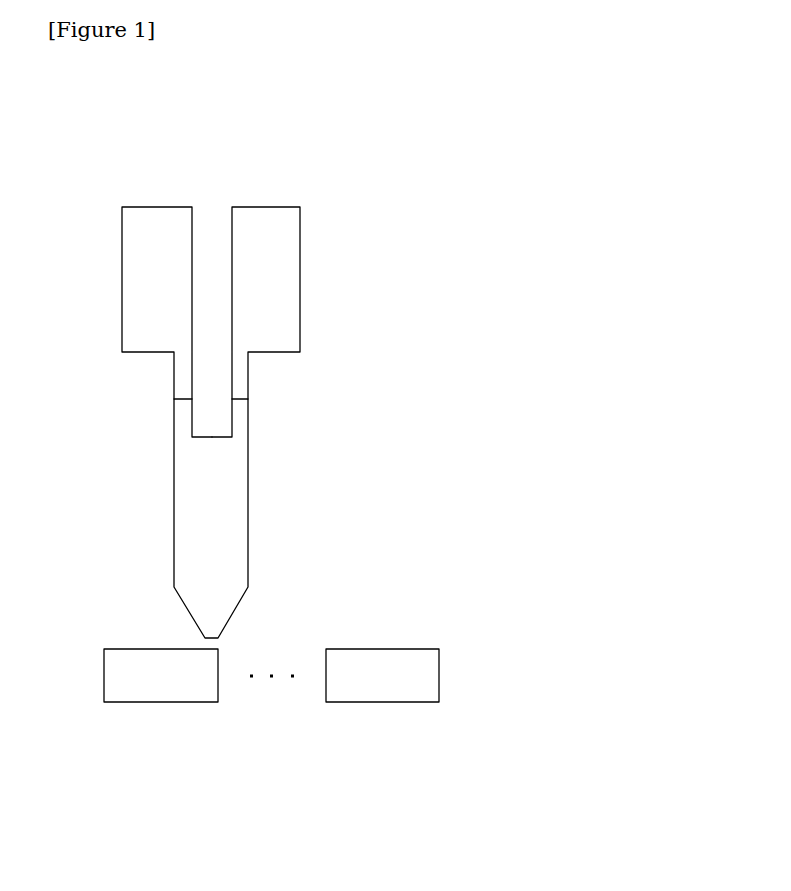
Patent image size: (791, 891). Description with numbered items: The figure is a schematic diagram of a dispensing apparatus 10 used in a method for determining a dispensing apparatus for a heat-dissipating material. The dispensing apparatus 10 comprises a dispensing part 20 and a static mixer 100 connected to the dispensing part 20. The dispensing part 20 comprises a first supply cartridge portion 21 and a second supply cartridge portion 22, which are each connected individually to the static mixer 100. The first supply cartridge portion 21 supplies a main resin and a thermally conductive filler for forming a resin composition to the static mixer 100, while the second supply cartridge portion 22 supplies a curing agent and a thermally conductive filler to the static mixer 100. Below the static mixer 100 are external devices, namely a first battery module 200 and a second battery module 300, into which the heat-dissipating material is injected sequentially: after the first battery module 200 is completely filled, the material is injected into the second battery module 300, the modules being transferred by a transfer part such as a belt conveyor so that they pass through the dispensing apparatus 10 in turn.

The dispensing apparatus 10 is at (424, 104).
The dispensing part 20 is at (211, 283).
The first supply cartridge portion 21 is at (122, 228).
The second supply cartridge portion 22 is at (300, 228).
The static mixer 100 is at (274, 462).
The first battery module 200 is at (158, 702).
The second battery module 300 is at (380, 702).